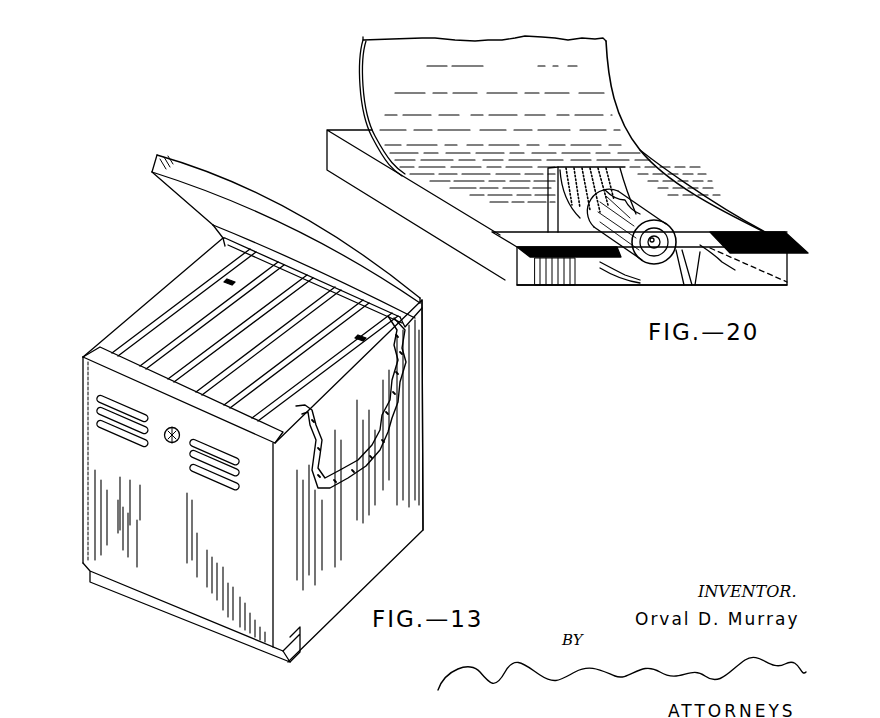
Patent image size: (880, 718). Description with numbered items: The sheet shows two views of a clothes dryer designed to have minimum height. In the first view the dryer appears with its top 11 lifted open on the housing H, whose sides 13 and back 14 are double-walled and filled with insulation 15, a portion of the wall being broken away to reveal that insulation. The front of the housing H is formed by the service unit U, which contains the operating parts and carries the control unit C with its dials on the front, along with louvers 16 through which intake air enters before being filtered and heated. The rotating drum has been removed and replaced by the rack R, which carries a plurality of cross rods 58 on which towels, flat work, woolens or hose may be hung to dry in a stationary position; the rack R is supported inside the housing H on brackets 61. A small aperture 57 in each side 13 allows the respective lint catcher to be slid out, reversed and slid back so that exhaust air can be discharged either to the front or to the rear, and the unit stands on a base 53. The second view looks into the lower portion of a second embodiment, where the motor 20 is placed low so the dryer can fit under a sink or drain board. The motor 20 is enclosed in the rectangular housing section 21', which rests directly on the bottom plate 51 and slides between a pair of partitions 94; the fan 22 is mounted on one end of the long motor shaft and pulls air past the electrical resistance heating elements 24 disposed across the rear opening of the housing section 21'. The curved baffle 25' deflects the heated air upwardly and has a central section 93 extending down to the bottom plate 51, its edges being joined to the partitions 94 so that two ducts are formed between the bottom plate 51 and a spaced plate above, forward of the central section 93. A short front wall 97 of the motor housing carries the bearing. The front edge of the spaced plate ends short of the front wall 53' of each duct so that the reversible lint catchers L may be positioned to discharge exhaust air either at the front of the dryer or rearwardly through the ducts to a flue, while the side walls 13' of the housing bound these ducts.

In FIG. 13, the top 11 is at (175, 187).
In FIG. 13, the sides 13 is at (272, 443).
In FIG. 13, the back 14 is at (281, 257).
In FIG. 13, the insulation 15 is at (368, 436).
In FIG. 13, the louvers 16 is at (127, 440).
In FIG. 13, the base plate 53 is at (186, 625).
In FIG. 13, the aperture 57 is at (308, 604).
In FIG. 13, the cross rods 58 is at (255, 352).
In FIG. 13, the brackets 61 is at (229, 282).
In FIG. 13, the rack R is at (305, 314).
In FIG. 13, the control unit C is at (170, 443).
In FIG. 13, the housing H is at (425, 353).
In FIG. 13, the service unit U is at (103, 525).
In FIG. 20, the motor 20 is at (648, 219).
In FIG. 20, the housing section 21' is at (546, 178).
In FIG. 20, the fan 22 is at (617, 190).
In FIG. 20, the electrical resistance heating elements 24 is at (597, 177).
In FIG. 20, the baffle 25' is at (572, 139).
In FIG. 20, the central section 93 is at (527, 184).
In FIG. 20, the partitions 94 is at (623, 278).
In FIG. 20, the front wall 97 is at (682, 280).
In FIG. 20, the lint catchers L is at (500, 241).
In FIG. 20, the platform wall 13' is at (652, 265).
In FIG. 20, the front wall 53' is at (652, 290).
In FIG. 20, the bottom plate 51 is at (612, 270).